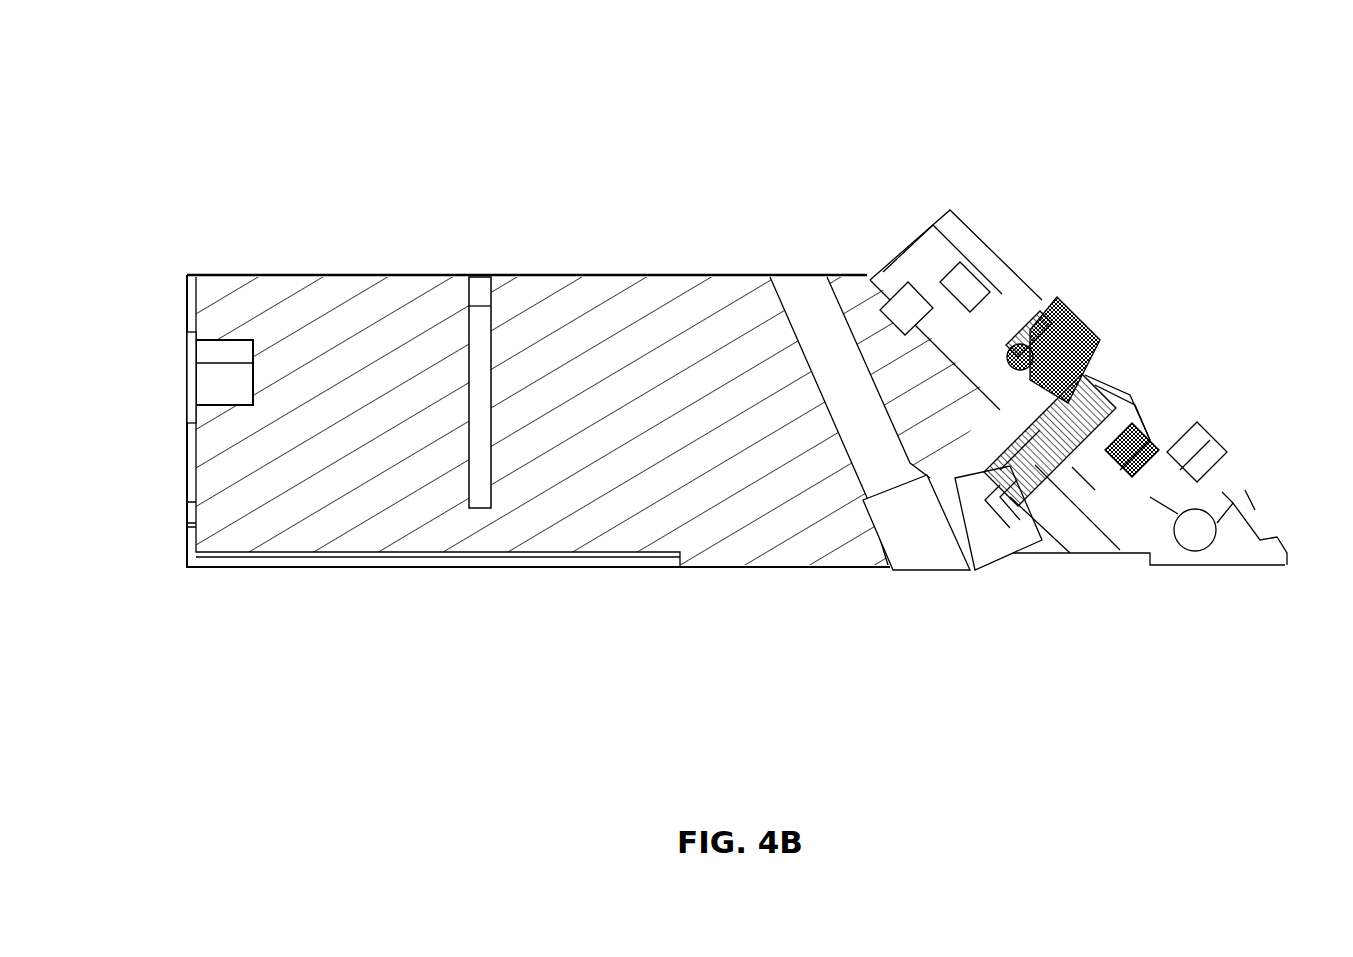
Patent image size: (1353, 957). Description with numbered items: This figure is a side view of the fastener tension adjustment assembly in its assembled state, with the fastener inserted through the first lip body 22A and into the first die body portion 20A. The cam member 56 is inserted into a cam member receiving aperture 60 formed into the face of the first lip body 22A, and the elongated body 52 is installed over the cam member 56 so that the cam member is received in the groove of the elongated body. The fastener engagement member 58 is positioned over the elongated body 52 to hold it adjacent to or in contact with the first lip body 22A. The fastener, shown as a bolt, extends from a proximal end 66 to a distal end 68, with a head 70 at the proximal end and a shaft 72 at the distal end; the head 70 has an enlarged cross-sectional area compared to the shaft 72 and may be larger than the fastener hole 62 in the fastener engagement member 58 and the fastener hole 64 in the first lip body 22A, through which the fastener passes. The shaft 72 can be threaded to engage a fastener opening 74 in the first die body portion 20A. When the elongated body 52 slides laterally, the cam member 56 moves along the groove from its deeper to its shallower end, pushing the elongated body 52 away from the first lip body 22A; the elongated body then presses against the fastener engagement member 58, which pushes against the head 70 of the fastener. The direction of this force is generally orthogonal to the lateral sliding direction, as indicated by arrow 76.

The first die body portion 20A is at (325, 548).
The first lip body 22A is at (1238, 565).
The elongated body 52 is at (1040, 325).
The cam member 56 is at (1020, 345).
The fastener engagement member 58 is at (1092, 333).
The cam member receiving aperture 60 is at (1010, 360).
The fastener hole 62 is at (1100, 415).
The fastener hole 64 is at (1040, 430).
The proximal end 66 is at (1100, 395).
The distal end 68 is at (1017, 480).
The head 70 is at (1140, 462).
The shaft 72 is at (1072, 467).
The fastener opening 74 is at (1000, 485).
The arrow 76 is at (1042, 342).